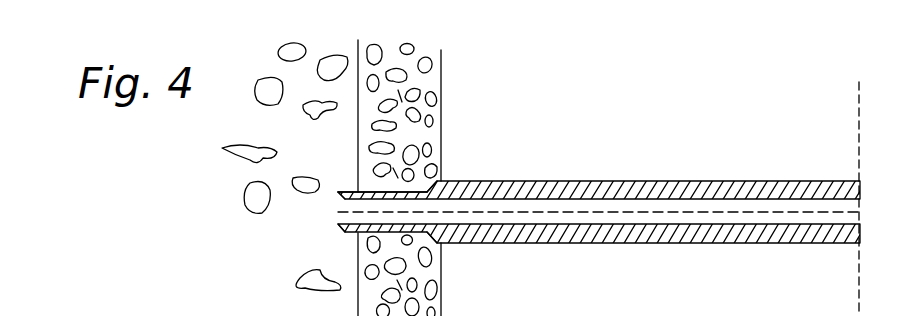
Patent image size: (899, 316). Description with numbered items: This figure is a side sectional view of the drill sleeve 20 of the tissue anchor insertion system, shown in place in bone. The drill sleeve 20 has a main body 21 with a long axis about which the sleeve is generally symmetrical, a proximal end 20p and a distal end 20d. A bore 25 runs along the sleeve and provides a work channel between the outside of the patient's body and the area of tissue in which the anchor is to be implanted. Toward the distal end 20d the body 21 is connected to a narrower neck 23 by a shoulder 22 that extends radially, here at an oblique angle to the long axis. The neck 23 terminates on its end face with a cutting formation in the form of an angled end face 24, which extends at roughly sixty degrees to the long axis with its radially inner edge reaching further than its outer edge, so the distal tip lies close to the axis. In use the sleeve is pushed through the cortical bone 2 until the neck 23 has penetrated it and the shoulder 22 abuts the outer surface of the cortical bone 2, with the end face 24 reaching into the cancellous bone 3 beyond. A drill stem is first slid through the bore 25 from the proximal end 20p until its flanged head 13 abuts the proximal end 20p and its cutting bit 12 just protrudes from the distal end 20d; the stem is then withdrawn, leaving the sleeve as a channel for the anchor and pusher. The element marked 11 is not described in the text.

The cortical bone 2 is at (441, 83).
The cancellous bone 3 is at (279, 132).
The element 11 is at (539, 304).
The cutting bit 12 is at (634, 310).
The flanged head 13 is at (814, 310).
The drill sleeve 20 is at (647, 168).
The distal end 20d is at (329, 243).
The proximal end 20p is at (825, 129).
The main body 21 is at (581, 190).
The shoulder 22 is at (441, 176).
The neck 23 is at (367, 192).
The angled end face 24 is at (329, 204).
The bore 25 is at (682, 203).